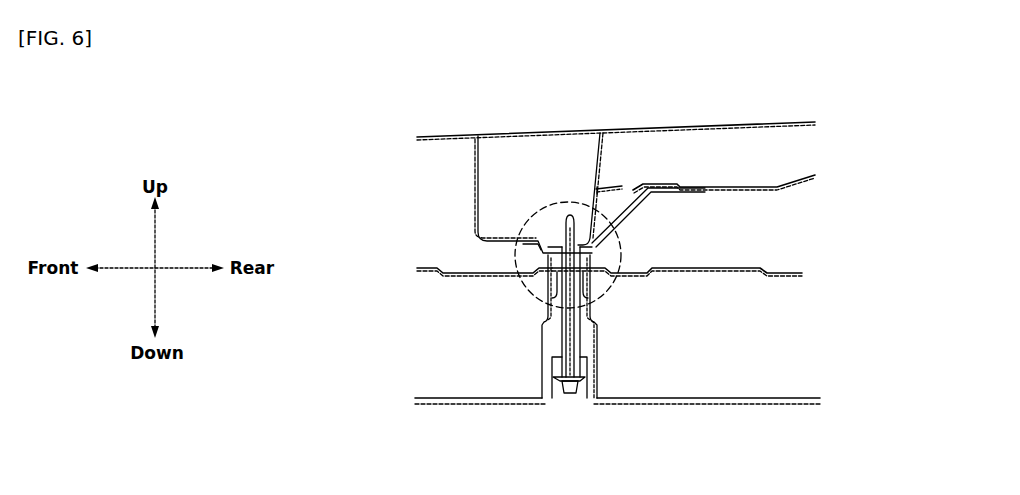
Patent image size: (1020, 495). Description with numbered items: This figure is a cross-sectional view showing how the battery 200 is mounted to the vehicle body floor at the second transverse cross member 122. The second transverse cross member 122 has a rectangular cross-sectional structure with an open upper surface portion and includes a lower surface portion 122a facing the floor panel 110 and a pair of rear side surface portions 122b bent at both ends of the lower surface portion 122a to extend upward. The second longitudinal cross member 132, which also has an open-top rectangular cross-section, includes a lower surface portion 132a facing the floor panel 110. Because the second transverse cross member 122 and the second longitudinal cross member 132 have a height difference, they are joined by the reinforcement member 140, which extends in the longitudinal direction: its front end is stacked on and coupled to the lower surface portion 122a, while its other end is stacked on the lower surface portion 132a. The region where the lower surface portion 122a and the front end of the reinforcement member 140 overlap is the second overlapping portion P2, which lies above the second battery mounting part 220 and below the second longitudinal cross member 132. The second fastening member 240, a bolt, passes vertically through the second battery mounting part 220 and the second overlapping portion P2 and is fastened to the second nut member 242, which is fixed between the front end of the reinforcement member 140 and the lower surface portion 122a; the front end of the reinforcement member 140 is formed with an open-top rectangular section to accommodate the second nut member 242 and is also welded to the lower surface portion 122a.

The floor panel 110 is at (742, 123).
The second transverse cross member 122 is at (360, 223).
The lower surface portion 122a is at (450, 268).
The rear side surface portions 122b is at (478, 210).
The second longitudinal cross member 132 is at (721, 210).
The lower surface portion 132a is at (767, 190).
The reinforcement member 140 is at (628, 206).
The battery 200 is at (730, 279).
The second battery mounting part 220 is at (597, 338).
The second fastening member 240 is at (565, 393).
The second nut member 242 is at (560, 241).
The second overlapping portion P2 is at (567, 213).